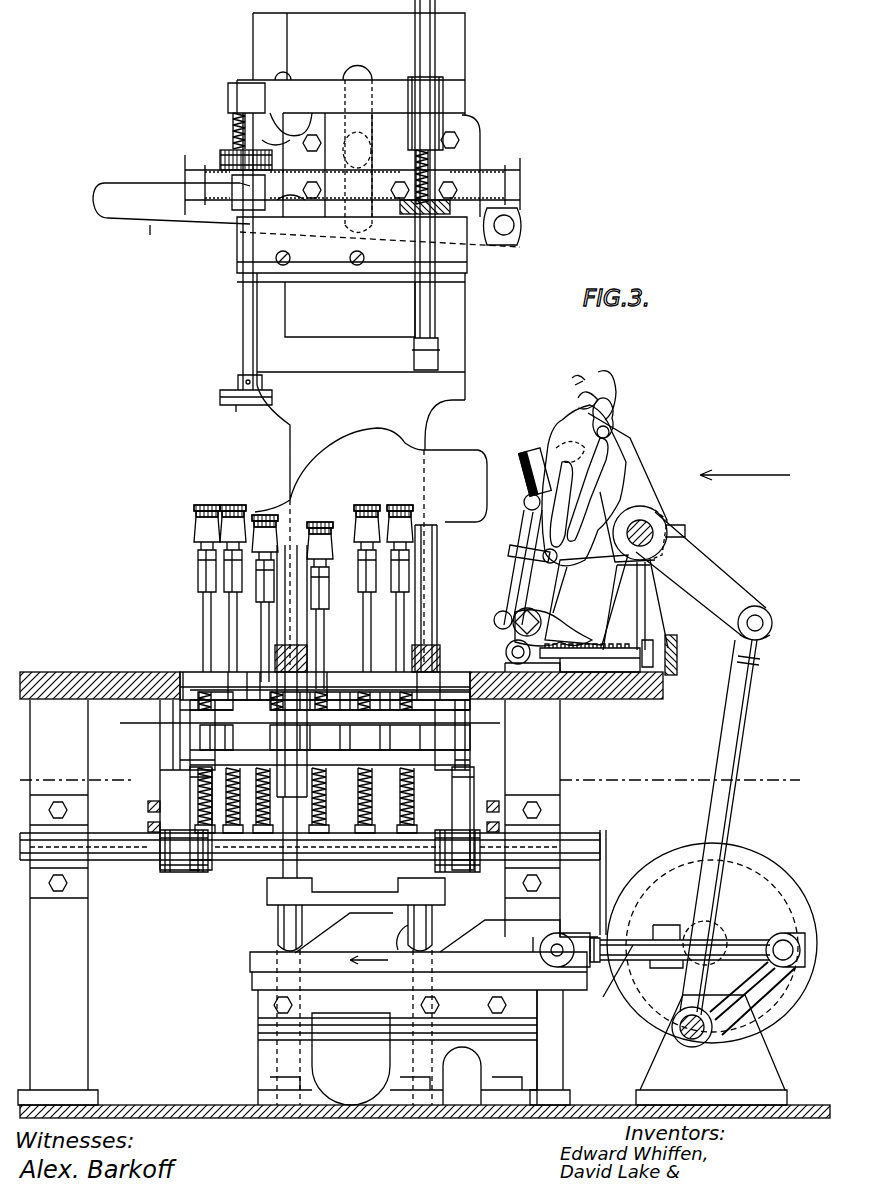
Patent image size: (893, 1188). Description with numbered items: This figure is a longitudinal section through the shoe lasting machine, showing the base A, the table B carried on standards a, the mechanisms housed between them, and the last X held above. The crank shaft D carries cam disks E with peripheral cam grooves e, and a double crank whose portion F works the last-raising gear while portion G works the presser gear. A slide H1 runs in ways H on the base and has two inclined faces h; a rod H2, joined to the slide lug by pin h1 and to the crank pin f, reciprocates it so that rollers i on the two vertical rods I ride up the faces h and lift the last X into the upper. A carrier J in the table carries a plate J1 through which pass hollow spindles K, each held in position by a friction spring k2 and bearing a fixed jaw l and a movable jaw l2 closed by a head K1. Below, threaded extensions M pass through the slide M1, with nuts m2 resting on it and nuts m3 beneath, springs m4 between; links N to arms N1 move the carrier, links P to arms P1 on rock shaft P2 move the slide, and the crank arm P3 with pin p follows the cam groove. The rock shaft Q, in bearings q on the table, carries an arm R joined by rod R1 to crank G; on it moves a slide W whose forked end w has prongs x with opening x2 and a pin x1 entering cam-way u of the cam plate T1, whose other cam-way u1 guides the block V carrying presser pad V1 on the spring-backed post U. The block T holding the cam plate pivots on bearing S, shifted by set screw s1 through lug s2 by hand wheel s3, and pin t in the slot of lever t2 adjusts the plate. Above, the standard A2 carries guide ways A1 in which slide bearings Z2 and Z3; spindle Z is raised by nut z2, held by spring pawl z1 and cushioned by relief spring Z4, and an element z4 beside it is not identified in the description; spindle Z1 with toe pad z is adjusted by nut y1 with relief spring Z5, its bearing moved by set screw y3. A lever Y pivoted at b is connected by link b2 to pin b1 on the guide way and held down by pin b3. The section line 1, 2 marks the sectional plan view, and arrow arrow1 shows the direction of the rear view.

The base A is at (198, 1106).
The guide ways A1 is at (380, 178).
The standard A2 is at (362, 332).
The table B is at (146, 672).
The standards a is at (576, 1035).
The lever Y is at (171, 218).
The nut y1 is at (230, 150).
The set screw y3 is at (196, 166).
The spindle Z is at (435, 313).
The spindle Z1 is at (243, 312).
The bearing Z2 is at (488, 135).
The bearing Z3 is at (306, 163).
The relief spring Z4 is at (438, 177).
The relief spring Z5 is at (230, 122).
The pad z is at (233, 414).
The spring pawl z1 is at (444, 57).
The nut z2 is at (453, 194).
The knurled nut z4 is at (431, 207).
The pivot b is at (506, 228).
The pin b1 is at (357, 150).
The link b2 is at (358, 156).
The pin b3 is at (287, 156).
The last X is at (367, 479).
The fixed jaw l is at (287, 495).
The movable jaw l2 is at (205, 522).
The hollow spindle K is at (208, 626).
The head K1 is at (208, 575).
The carrier J is at (330, 688).
The plate J1 is at (310, 716).
The friction spring k2 is at (334, 701).
The extension M is at (328, 738).
The slide M1 is at (330, 757).
The nuts m2 is at (380, 736).
The nuts m3 is at (322, 828).
The spring m4 is at (306, 800).
The link N is at (170, 748).
The arms N1 is at (320, 809).
The links P is at (192, 808).
The arms P1 is at (170, 872).
The rock shaft P2 is at (286, 846).
The crank arm P3 is at (599, 881).
The section line 1 is at (70, 781).
The section line 2 is at (685, 781).
The vertical rods I is at (300, 870).
The inclined faces h is at (438, 929).
The rollers i is at (357, 963).
The ways H is at (397, 1027).
The slide H1 is at (418, 961).
The rod H2 is at (610, 979).
The pin h1 is at (560, 942).
The pin p is at (604, 942).
The crank shaft D is at (715, 960).
The cam disks E is at (712, 974).
The cam grooves e is at (653, 871).
The crank F is at (752, 975).
The crank pin f is at (785, 950).
The crank G is at (692, 1042).
The rock shaft Q is at (646, 530).
The arm R is at (704, 576).
The rod R1 is at (742, 748).
The slide W is at (642, 468).
The pronged end w is at (574, 374).
The prongs x is at (607, 388).
The pin x1 is at (608, 427).
The opening x2 is at (588, 395).
The block T is at (555, 590).
The cam plate T1 is at (584, 485).
The pin t is at (527, 617).
The lever t2 is at (553, 628).
The cam-way u is at (603, 491).
The cam-way u1 is at (573, 488).
The block V is at (564, 448).
The presser pad V1 is at (531, 472).
The vertical post U is at (522, 522).
The bearings S is at (525, 656).
The set screw s1 is at (646, 650).
The lug s2 is at (655, 644).
The hand wheel s3 is at (676, 651).
The bearings q is at (635, 605).
The arrow arrow1 is at (745, 468).